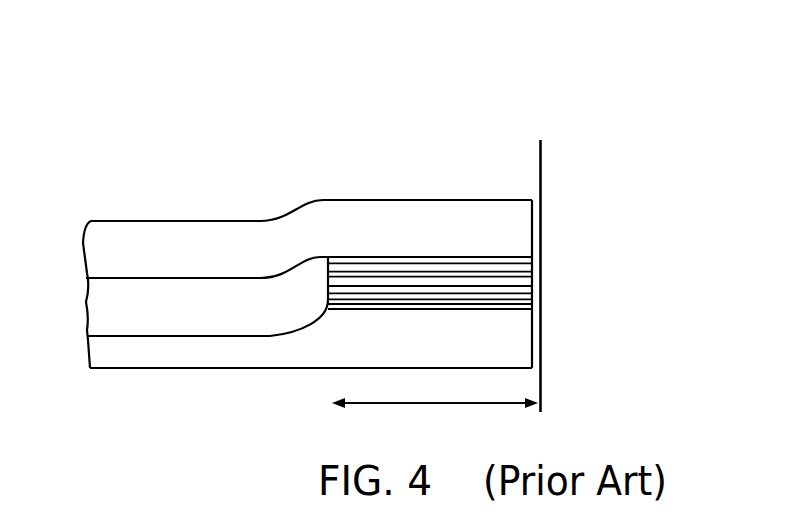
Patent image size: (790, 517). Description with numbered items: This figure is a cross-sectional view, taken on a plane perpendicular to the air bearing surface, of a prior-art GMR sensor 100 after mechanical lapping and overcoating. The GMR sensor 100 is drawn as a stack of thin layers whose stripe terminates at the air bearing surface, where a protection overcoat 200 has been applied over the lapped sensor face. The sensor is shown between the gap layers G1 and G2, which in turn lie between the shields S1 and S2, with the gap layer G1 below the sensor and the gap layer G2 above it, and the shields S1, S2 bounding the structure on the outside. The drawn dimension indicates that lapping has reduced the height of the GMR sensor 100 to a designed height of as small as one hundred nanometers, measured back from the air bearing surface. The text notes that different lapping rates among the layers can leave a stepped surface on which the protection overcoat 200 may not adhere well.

The GMR sensor 100 is at (324, 210).
The protection overcoat 200 is at (544, 257).
The first shield S1 is at (311, 381).
The second shield S2 is at (311, 197).
The first gap layer G1 is at (309, 303).
The second gap layer G2 is at (309, 248).